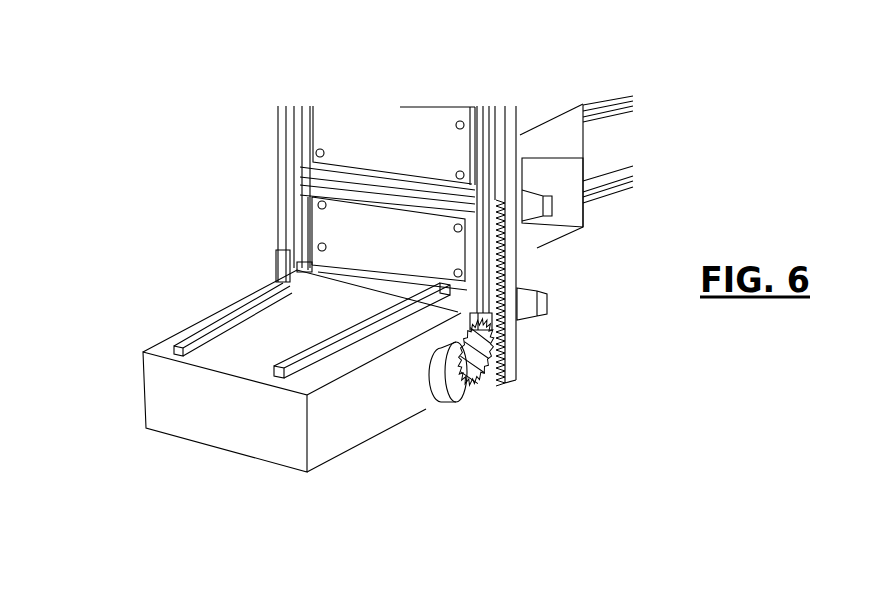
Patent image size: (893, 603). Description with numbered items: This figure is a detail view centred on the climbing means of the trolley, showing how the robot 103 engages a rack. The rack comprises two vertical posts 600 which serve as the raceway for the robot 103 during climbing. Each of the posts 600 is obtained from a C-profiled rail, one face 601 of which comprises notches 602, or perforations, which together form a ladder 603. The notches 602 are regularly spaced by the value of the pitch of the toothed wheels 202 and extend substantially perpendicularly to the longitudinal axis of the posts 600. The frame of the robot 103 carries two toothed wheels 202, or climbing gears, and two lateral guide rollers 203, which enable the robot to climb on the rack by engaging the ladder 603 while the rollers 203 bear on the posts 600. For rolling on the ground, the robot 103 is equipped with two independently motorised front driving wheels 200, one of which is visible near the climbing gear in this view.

The robot 103 is at (170, 315).
The vertical posts 600 is at (280, 107).
The ladder 603 is at (495, 108).
The notches 602 is at (517, 272).
The face 601 is at (500, 243).
The lateral guide rollers 203 is at (496, 300).
The toothed wheels 202 is at (486, 378).
The front driving wheels 200 is at (443, 400).